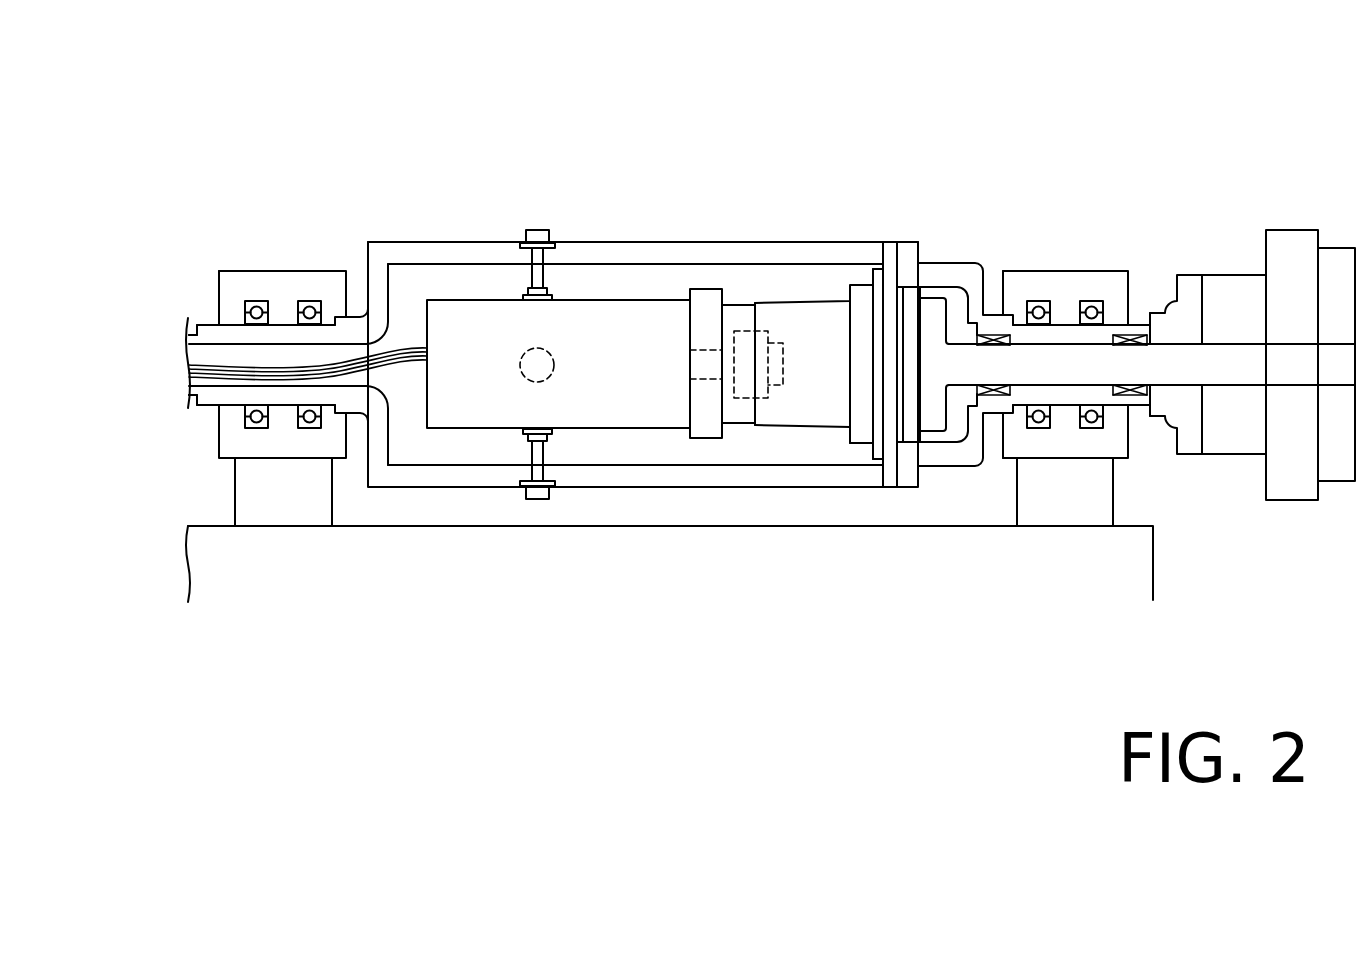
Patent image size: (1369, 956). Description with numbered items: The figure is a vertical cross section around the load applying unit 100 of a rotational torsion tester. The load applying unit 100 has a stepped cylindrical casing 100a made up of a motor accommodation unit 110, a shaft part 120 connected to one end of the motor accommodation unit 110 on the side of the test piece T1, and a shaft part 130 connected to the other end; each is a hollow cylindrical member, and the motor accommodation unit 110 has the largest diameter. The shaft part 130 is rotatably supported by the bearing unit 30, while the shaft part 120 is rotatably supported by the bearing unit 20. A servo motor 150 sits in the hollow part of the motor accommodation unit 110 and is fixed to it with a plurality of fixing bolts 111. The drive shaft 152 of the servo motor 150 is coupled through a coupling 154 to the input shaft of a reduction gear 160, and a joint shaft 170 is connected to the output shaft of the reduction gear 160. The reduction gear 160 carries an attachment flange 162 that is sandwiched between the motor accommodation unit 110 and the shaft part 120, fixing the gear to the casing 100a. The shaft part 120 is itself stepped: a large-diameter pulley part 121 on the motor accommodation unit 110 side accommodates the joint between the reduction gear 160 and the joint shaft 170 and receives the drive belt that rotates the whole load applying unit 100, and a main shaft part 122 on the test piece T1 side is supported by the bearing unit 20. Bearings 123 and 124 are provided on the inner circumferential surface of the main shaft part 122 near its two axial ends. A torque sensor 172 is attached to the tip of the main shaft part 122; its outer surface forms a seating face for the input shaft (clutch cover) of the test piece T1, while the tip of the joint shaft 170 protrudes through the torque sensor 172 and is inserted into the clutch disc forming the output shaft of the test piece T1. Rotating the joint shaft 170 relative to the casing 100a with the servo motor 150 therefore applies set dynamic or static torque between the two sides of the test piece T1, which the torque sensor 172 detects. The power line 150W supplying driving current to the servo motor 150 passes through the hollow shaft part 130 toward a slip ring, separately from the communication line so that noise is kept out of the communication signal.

The bearing unit 20 is at (1083, 271).
The bearing unit 30 is at (272, 271).
The load applying unit 100 is at (610, 242).
The casing 100a is at (420, 242).
The motor accommodation unit 110 is at (632, 300).
The fixing bolt 111 is at (530, 275).
The shaft part 120 is at (1068, 304).
The pulley part 121 is at (932, 467).
The main shaft part 122 is at (1068, 321).
The bearing 123 is at (988, 334).
The bearing 124 is at (1137, 334).
The shaft part 130 is at (208, 318).
The servo motor 150 is at (455, 429).
The power line 150W is at (213, 364).
The drive shaft 152 is at (708, 350).
The coupling 154 is at (740, 330).
The reduction gear 160 is at (815, 301).
The attachment flange 162 is at (890, 242).
The joint shaft 170 is at (1232, 367).
The torque sensor 172 is at (1232, 275).
The test piece T1 is at (1296, 230).